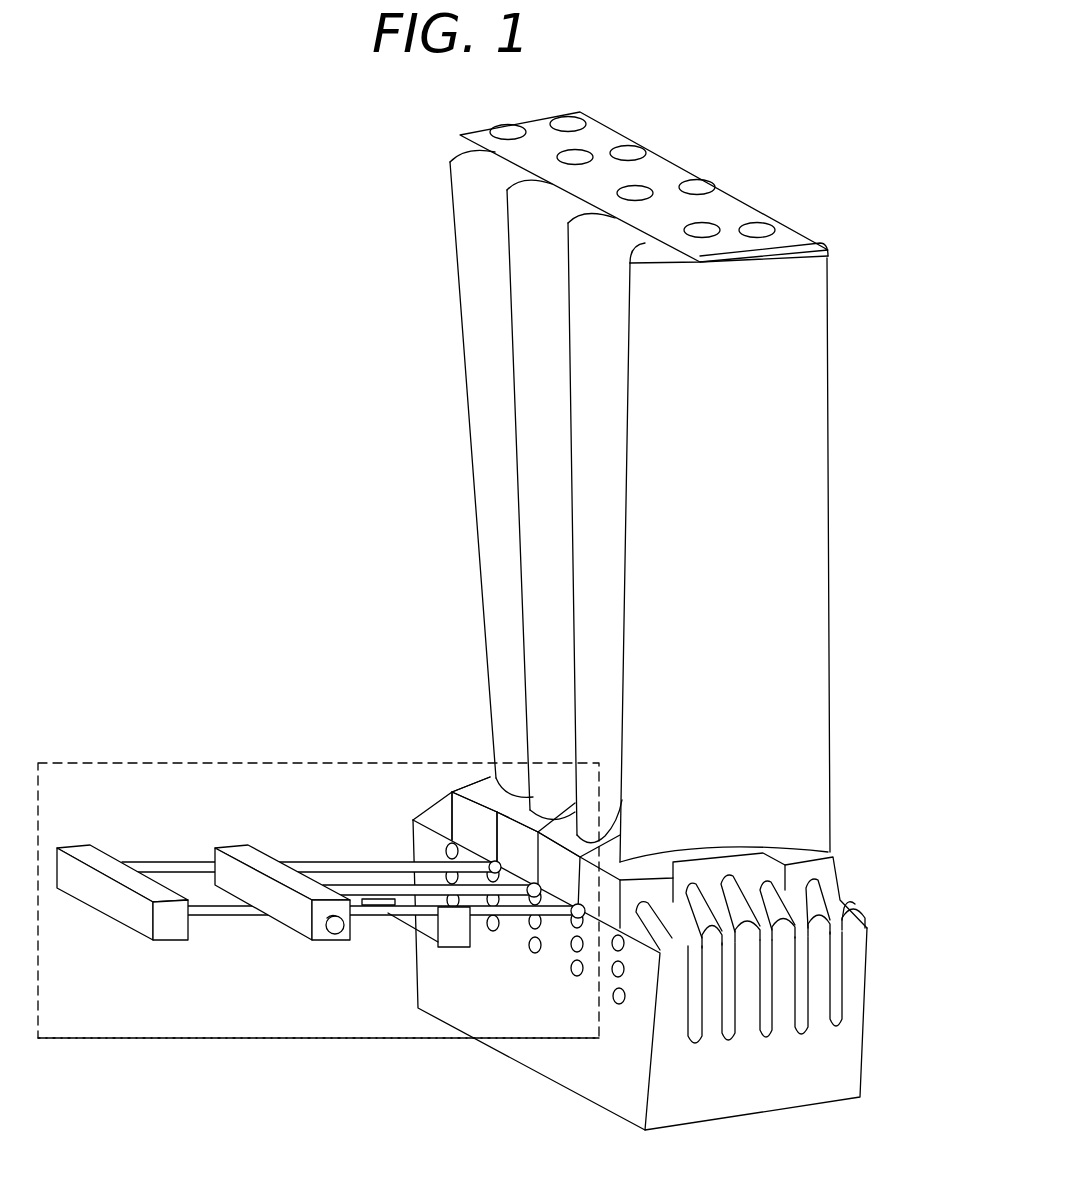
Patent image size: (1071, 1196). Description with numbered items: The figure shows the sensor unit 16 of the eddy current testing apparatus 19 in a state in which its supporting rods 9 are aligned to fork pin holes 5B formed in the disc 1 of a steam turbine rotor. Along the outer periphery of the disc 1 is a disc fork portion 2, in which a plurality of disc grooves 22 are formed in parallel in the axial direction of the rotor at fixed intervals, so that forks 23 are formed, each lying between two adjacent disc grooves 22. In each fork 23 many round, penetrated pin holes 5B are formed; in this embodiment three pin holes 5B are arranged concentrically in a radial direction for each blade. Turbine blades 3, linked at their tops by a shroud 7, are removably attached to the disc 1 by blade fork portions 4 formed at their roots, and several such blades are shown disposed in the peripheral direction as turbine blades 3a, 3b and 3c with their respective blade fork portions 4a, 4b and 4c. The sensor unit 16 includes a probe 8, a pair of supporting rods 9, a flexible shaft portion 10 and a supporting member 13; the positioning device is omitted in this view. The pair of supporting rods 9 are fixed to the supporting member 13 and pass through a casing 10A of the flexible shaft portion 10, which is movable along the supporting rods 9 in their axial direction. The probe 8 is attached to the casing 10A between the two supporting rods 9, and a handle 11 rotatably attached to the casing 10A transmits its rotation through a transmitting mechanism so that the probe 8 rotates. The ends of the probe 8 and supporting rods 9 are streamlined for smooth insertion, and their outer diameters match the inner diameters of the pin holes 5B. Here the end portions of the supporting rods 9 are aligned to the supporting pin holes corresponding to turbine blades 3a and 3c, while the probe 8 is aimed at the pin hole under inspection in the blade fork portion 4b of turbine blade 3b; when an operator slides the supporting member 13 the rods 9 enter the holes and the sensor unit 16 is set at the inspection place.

The disc 1 is at (670, 993).
The disc fork portion 2 is at (792, 1020).
The turbine blade 3 is at (828, 410).
The turbine blade 3a is at (648, 383).
The turbine blade 3b is at (587, 320).
The turbine blade 3c is at (530, 263).
The blade fork portion 4 is at (665, 800).
The blade fork portion 4a is at (610, 887).
The blade fork portion 4b is at (558, 858).
The blade fork portion 4c is at (515, 832).
The fork pin hole 5B is at (619, 1005).
The shroud 7 is at (745, 185).
The probe 8 is at (432, 882).
The supporting rod 9 is at (330, 862).
The flexible shaft portion 10 is at (300, 932).
The casing 10A is at (235, 848).
The handle 11 is at (332, 942).
The supporting member 13 is at (88, 847).
The sensor unit 16 is at (340, 1040).
The eddy current testing apparatus 19 is at (265, 752).
The disc groove 22 is at (830, 945).
The fork 23 is at (745, 985).